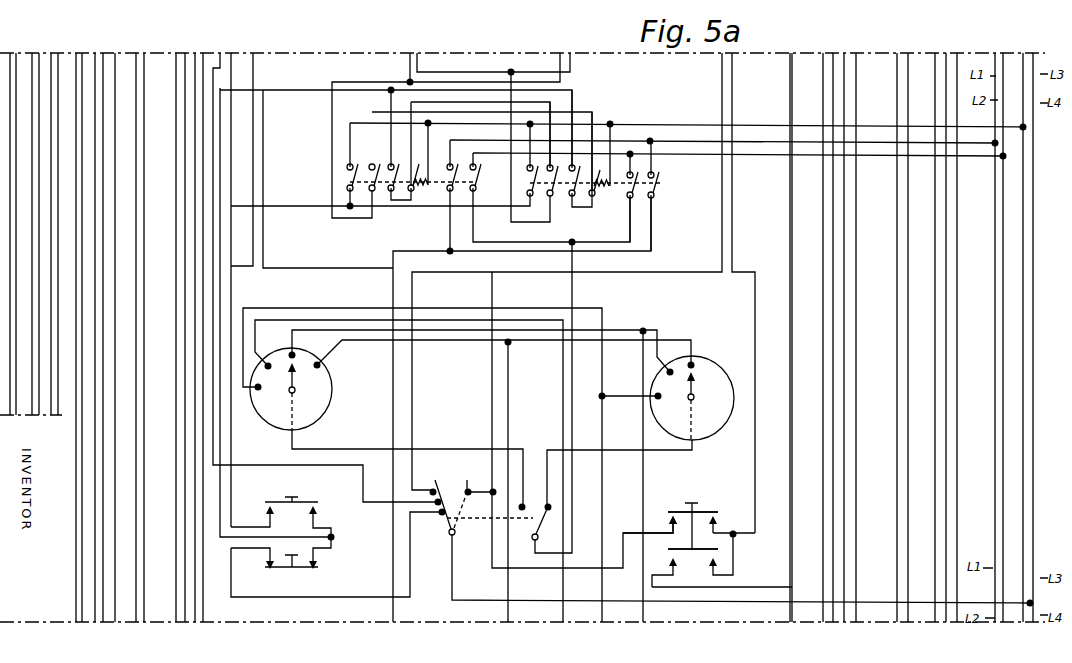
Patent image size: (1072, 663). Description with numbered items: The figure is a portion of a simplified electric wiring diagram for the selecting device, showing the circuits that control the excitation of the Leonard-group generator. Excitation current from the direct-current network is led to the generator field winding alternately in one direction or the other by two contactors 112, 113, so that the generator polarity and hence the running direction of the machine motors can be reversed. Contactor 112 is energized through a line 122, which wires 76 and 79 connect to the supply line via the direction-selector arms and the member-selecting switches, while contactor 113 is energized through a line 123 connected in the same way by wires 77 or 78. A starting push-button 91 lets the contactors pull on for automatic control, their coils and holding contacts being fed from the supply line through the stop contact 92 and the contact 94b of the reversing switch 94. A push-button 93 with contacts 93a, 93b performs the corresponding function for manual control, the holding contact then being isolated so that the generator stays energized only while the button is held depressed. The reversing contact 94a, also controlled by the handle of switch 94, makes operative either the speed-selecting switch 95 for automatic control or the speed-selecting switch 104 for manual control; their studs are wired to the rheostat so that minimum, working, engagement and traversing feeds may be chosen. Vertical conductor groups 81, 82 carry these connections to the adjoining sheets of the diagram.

The wire 76 is at (418, 54).
The wire 77 is at (407, 71).
The wire 78 is at (560, 52).
The wire 79 is at (570, 65).
The left conductor bus 81 is at (178, 90).
The right conductor bus 82 is at (832, 89).
The starting push-button 91 is at (308, 502).
The stop contact 92 is at (303, 568).
The push-button for manual control 93 is at (707, 546).
The contact of push-button 93a is at (710, 510).
The contact of push-button 93b is at (719, 550).
The reversing switch 94 is at (482, 530).
The reversing contact 94a is at (530, 525).
The contact of reversing switch 94b is at (446, 533).
The speed-selecting switch 95 is at (278, 420).
The speed-selecting switch 104 is at (707, 414).
The contactor 112 is at (418, 184).
The contactor 113 is at (601, 194).
The line 122 is at (510, 134).
The line 123 is at (330, 128).